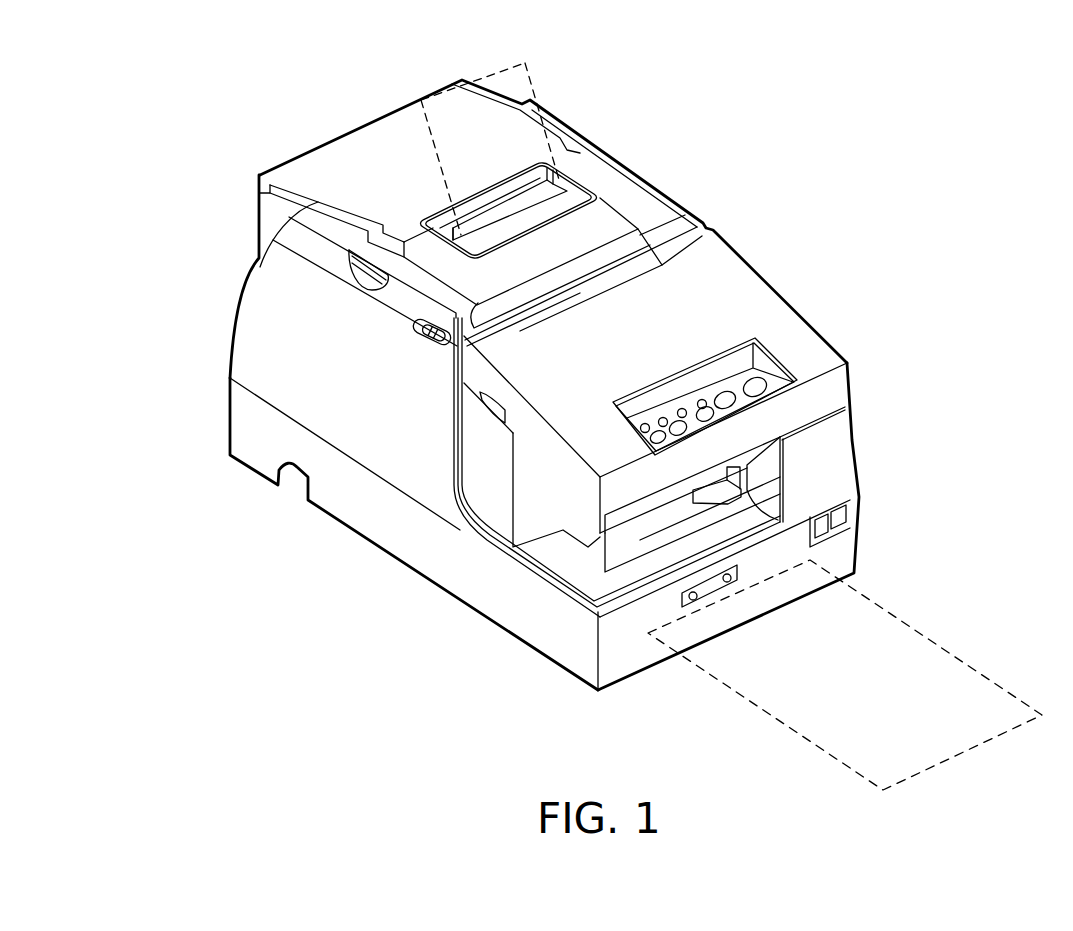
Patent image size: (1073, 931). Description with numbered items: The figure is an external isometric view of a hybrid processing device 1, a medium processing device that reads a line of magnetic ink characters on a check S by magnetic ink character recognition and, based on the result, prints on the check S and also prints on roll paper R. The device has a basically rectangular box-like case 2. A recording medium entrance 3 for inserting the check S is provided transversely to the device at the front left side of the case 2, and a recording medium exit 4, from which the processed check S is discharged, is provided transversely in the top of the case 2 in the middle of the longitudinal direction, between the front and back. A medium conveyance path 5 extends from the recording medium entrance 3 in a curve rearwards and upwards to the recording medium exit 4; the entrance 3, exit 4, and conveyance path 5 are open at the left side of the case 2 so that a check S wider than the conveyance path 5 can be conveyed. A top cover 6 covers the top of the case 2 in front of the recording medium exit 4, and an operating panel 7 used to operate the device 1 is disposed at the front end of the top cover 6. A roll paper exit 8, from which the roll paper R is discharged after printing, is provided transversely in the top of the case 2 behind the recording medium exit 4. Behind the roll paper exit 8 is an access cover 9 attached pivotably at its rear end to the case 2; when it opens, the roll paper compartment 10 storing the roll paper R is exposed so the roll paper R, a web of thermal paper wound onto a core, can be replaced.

The hybrid processing device 1 is at (750, 148).
The case 2 is at (243, 318).
The recording medium entrance 3 is at (594, 553).
The recording medium exit 4 is at (618, 252).
The medium conveyance path 5 is at (458, 517).
The top cover 6 is at (753, 297).
The operating panel 7 is at (756, 386).
The roll paper exit 8 is at (478, 234).
The access cover 9 is at (313, 165).
The roll paper compartment 10 is at (383, 147).
The roll paper R is at (540, 85).
The check S is at (967, 661).